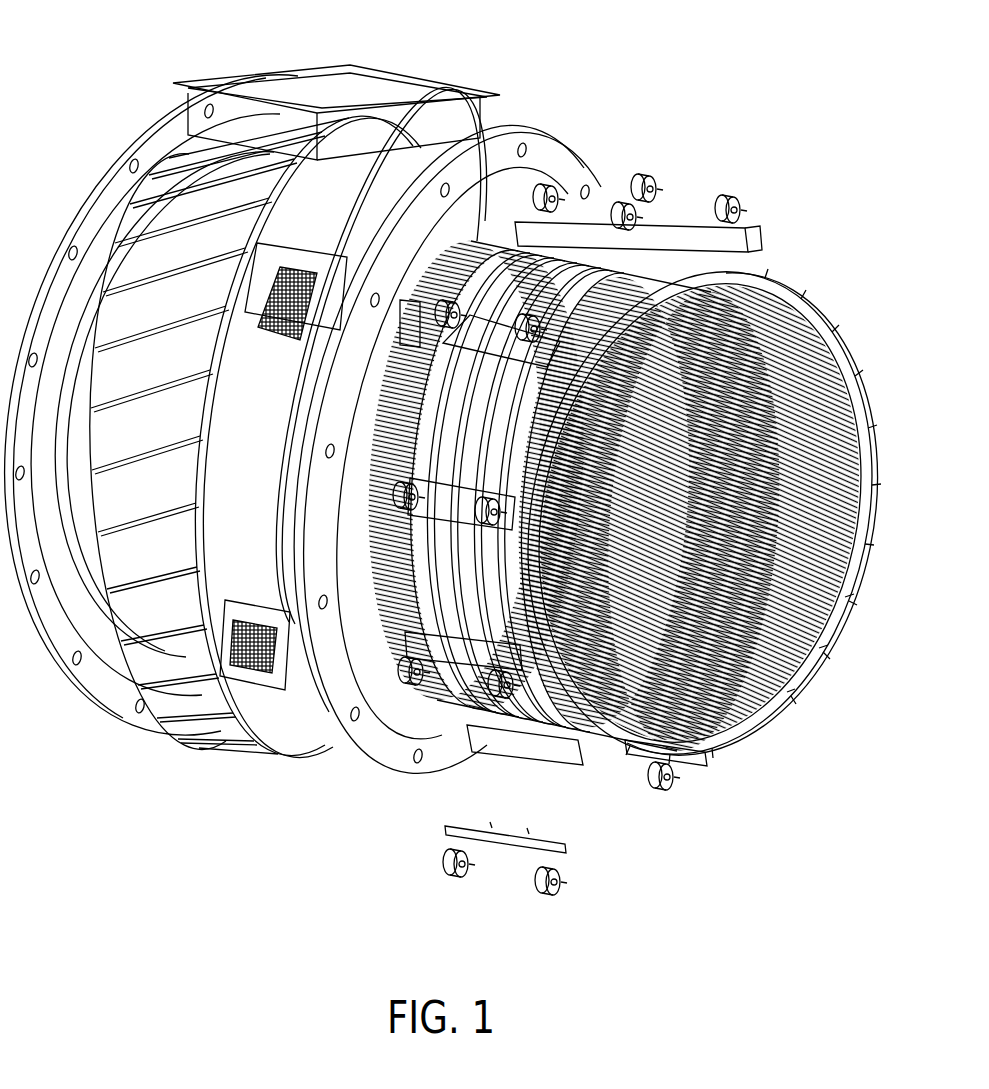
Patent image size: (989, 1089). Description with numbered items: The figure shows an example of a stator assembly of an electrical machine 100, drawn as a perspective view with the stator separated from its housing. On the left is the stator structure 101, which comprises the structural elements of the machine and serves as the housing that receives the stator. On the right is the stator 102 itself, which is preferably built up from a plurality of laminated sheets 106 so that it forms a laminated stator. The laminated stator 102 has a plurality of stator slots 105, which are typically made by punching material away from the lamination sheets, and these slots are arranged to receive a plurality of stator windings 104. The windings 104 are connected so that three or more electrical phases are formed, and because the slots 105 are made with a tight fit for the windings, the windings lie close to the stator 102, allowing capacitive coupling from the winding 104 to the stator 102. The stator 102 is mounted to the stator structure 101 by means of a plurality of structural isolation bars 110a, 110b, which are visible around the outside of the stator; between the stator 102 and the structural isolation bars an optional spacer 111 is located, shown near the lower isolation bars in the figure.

The electrical machine 100 is at (82, 83).
The stator structure 101 is at (58, 248).
The stator 102 is at (790, 277).
The stator windings 104 is at (810, 670).
The stator slots 105 is at (833, 617).
The laminated sheets 106 is at (743, 730).
The structural isolation bar 110a is at (493, 843).
The structural isolation bar 110b is at (677, 208).
The spacer 111 is at (567, 760).